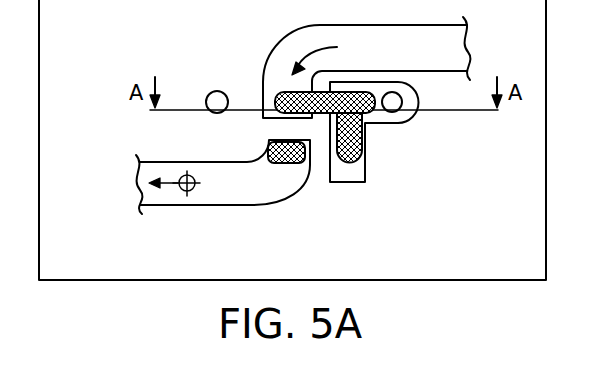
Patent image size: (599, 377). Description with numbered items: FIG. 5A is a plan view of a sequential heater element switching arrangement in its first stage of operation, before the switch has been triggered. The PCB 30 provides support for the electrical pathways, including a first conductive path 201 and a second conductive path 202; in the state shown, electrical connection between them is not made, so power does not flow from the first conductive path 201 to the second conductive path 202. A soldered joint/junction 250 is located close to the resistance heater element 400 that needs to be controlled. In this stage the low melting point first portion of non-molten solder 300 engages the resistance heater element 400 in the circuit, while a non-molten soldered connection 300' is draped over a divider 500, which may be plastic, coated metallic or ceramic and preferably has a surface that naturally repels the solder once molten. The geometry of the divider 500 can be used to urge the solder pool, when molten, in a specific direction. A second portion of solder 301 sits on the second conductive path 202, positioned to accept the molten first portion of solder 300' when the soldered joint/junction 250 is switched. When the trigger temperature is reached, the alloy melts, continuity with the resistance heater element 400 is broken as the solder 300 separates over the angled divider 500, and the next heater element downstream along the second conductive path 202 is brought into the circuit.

The PCB 30 is at (525, 271).
The first conductive path 201 is at (262, 92).
The second conductive path 202 is at (253, 205).
The soldered joint/junction 250 is at (268, 125).
The first portion of solder 300 is at (300, 61).
The non-molten soldered connection 300' is at (391, 142).
The second portion of solder 301 is at (292, 163).
The resistance heater element 400 is at (206, 102).
The divider 500 is at (358, 182).